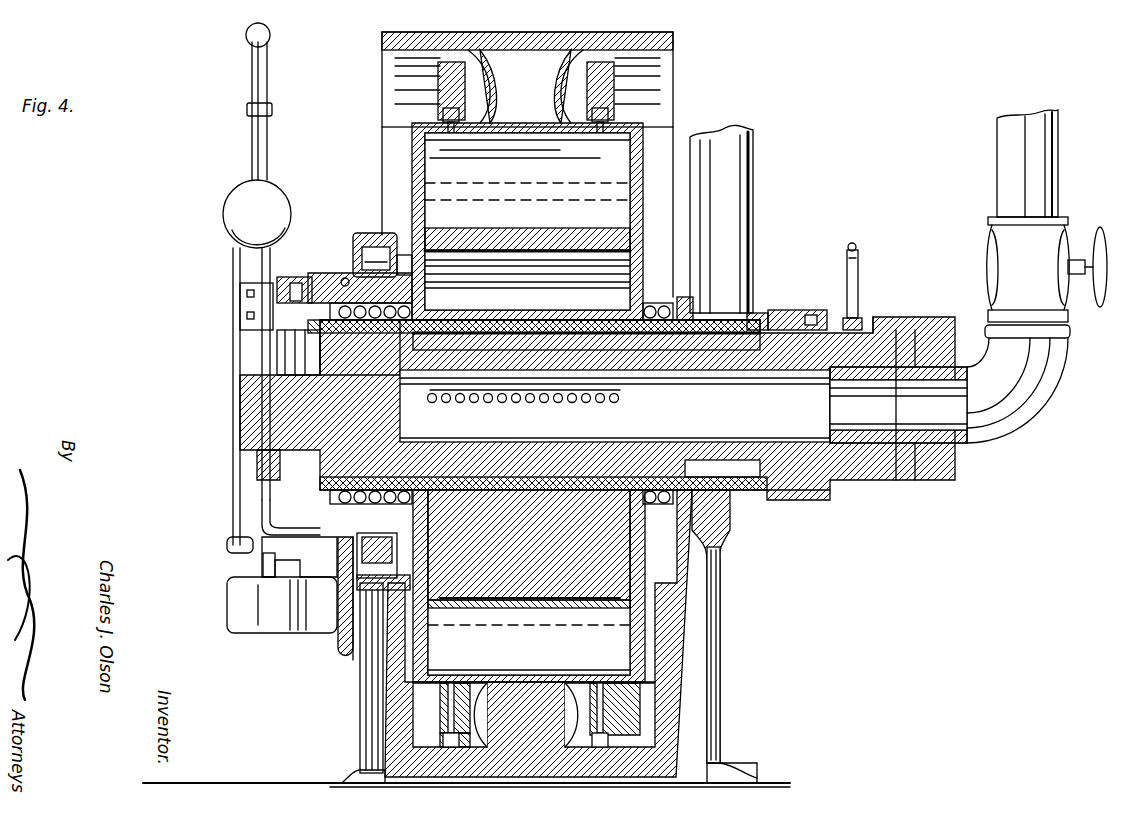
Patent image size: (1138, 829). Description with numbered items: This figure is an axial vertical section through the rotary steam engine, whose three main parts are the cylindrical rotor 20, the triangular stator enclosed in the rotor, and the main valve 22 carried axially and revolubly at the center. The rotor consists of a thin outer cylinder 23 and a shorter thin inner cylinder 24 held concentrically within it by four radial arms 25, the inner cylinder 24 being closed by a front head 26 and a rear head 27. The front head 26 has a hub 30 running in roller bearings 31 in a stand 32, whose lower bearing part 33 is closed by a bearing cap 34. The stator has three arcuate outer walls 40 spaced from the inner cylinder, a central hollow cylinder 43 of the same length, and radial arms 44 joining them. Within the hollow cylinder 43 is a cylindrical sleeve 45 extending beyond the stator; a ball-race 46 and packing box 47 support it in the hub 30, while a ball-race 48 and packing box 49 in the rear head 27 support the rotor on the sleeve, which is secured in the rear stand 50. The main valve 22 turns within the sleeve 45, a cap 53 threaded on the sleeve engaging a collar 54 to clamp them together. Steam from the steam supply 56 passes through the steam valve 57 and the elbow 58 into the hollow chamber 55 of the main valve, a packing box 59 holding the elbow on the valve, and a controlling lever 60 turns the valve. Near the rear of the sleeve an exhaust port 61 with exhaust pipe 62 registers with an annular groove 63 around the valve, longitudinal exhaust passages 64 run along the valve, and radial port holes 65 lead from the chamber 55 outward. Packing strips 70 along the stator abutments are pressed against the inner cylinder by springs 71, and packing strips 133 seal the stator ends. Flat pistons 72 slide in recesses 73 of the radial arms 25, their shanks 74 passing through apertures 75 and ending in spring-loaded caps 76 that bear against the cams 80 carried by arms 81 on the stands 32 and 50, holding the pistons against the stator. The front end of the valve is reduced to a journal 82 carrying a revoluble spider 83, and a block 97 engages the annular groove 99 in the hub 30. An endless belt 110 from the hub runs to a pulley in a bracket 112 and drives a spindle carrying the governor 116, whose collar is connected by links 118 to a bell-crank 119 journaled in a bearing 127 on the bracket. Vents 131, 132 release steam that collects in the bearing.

The cylindrical rotor 20 is at (684, 78).
The main valve 22 is at (838, 492).
The outer cylinder 23 is at (383, 757).
The inner cylinder 24 is at (505, 628).
The radial arms 25 is at (585, 665).
The front head 26 is at (413, 565).
The rear head 27 is at (642, 560).
The hub 30 is at (291, 517).
The roller bearings 31 is at (372, 250).
The stand 32 is at (370, 660).
The lower bearing part 33 is at (335, 573).
The bearing cap 34 is at (353, 250).
The arcuate outer walls 40 is at (540, 243).
The hollow cylinder 43 is at (614, 320).
The radial arms 44 is at (500, 495).
The cylindrical sleeve 45 is at (488, 325).
The ball-race 46 is at (415, 305).
The packing box 47 is at (345, 495).
The ball-race 48 is at (652, 305).
The packing box 49 is at (690, 300).
The rear stand 50 is at (722, 605).
The cap 53 is at (812, 316).
The collar 54 is at (822, 316).
The hollow chamber 55 is at (798, 450).
The steam supply 56 is at (1005, 140).
The steam valve 57 is at (1030, 265).
The elbow 58 is at (1025, 420).
The packing box 59 is at (922, 482).
The controlling lever 60 is at (855, 290).
The exhaust port 61 is at (755, 308).
The exhaust pipe 62 is at (720, 200).
The annular groove 63 is at (740, 470).
The exhaust passages 64 is at (540, 333).
The port holes 65 is at (560, 405).
The packing strip 70 is at (598, 612).
The springs 71 is at (545, 612).
The pistons 72 is at (527, 190).
The recess 73 is at (490, 144).
The shanks 74 is at (600, 146).
The apertures 75 is at (440, 115).
The cap 76 is at (445, 725).
The cams 80 is at (440, 66).
The arms 81 is at (400, 690).
The journal 82 is at (285, 463).
The spider 83 is at (242, 382).
The block 97 is at (303, 282).
The annular groove 99 is at (304, 352).
The endless belt 110 is at (340, 620).
The bracket 112 is at (245, 605).
The governor 116 is at (225, 212).
The links 118 is at (232, 330).
The bell-crank 119 is at (230, 548).
The bearing 127 is at (262, 565).
The vent 131 is at (665, 345).
The vent 132 is at (415, 372).
The packing strips 133 is at (645, 580).